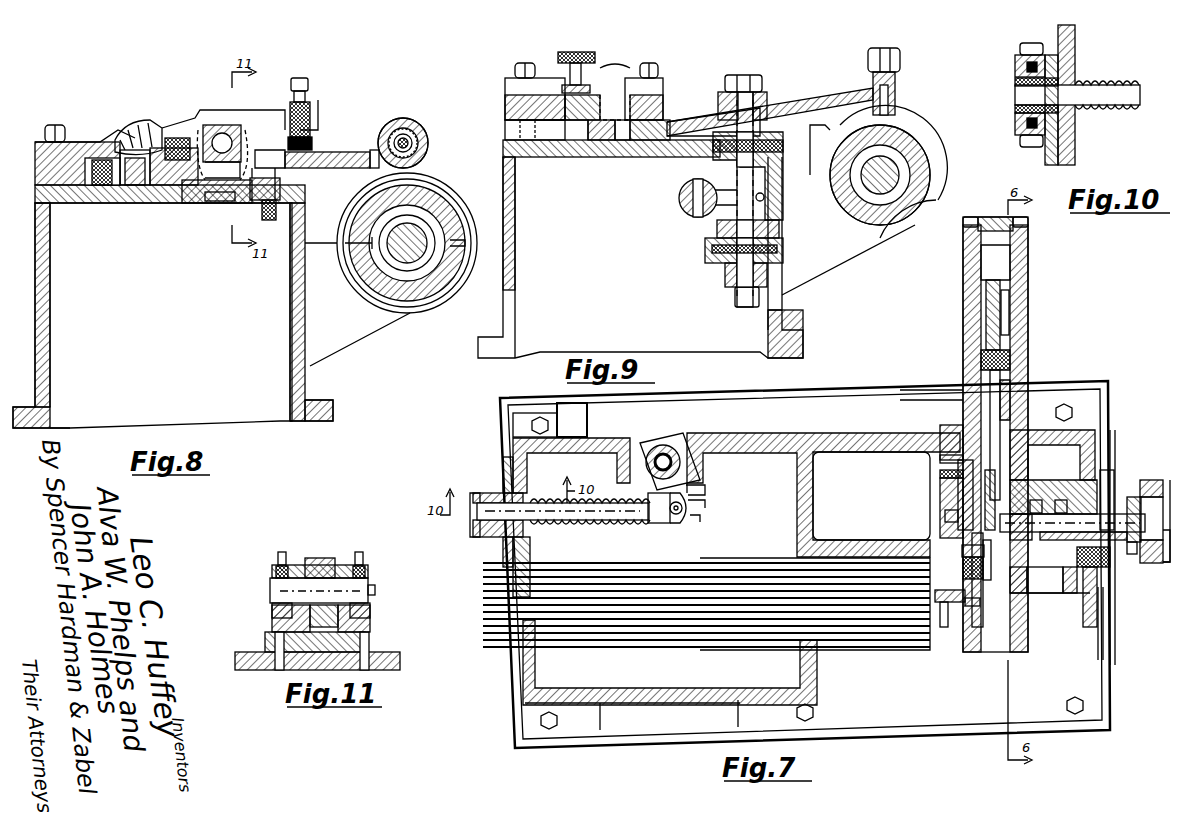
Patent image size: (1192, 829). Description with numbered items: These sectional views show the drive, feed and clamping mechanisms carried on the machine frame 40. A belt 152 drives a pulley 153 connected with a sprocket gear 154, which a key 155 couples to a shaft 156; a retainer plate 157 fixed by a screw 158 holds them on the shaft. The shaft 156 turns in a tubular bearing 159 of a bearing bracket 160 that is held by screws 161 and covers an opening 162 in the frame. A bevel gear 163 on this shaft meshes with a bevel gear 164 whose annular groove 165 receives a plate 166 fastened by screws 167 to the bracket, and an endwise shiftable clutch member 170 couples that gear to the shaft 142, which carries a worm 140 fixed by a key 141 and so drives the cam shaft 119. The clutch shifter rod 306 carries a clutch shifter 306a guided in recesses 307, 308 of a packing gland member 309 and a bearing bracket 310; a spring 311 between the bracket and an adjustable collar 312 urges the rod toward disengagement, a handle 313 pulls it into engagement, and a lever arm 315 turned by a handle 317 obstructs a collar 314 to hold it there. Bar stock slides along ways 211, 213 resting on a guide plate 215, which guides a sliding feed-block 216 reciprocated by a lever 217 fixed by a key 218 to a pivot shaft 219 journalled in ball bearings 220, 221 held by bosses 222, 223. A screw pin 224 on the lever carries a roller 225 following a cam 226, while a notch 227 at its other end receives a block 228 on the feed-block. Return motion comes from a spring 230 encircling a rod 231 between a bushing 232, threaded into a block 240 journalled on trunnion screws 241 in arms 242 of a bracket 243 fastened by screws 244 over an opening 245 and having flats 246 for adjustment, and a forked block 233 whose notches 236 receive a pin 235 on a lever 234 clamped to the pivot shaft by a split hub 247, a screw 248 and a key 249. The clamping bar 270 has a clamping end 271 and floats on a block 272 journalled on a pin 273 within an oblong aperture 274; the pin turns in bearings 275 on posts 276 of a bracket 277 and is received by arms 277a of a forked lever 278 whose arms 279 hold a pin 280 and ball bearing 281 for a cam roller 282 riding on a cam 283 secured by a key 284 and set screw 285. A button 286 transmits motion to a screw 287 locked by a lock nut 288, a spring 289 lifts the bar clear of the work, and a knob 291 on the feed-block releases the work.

In FIG. 8, the machine frame 40 is at (305, 378).
In FIG. 9, the machine frame 40 is at (782, 330).
In FIG. 11, the machine frame 40 is at (252, 665).
In FIG. 9, the cam shaft 119 is at (893, 222).
In FIG. 7, the worm 140 is at (985, 328).
In FIG. 7, the key 141 is at (1010, 302).
In FIG. 7, the shaft 142 is at (1000, 378).
In FIG. 7, the belt 152 is at (1158, 480).
In FIG. 7, the pulley 153 is at (1143, 490).
In FIG. 7, the sprocket gear 154 is at (1135, 545).
In FIG. 7, the key 155 is at (1128, 500).
In FIG. 7, the shaft 156 is at (1110, 560).
In FIG. 7, the retainer plate 157 is at (1168, 545).
In FIG. 7, the screw 158 is at (1168, 570).
In FIG. 7, the tubular bearing 159 is at (1082, 540).
In FIG. 7, the bearing bracket 160 is at (1066, 540).
In FIG. 7, the screws 161 is at (1113, 580).
In FIG. 7, the opening 162 is at (1060, 480).
In FIG. 7, the bevel gear 163 is at (1040, 540).
In FIG. 7, the bevel gear 164 is at (958, 515).
In FIG. 7, the annular groove 165 is at (985, 497).
In FIG. 7, the plate 166 is at (1035, 500).
In FIG. 7, the screws 167 is at (1065, 500).
In FIG. 7, the clutch member 170 is at (940, 460).
In FIG. 8, the way 211 is at (165, 140).
In FIG. 9, the way 211 is at (660, 82).
In FIG. 8, the way 213 is at (75, 148).
In FIG. 9, the way 213 is at (543, 80).
In FIG. 8, the guide plate 215 is at (130, 205).
In FIG. 9, the guide plate 215 is at (507, 110).
In FIG. 9, the feed-block 216 is at (622, 95).
In FIG. 9, the lever 217 is at (797, 108).
In FIG. 9, the key 218 is at (733, 95).
In FIG. 9, the pivot shaft 219 is at (750, 85).
In FIG. 7, the pivot shaft 219 is at (685, 445).
In FIG. 9, the ball bearing 220 is at (720, 150).
In FIG. 9, the ball bearing 221 is at (710, 245).
In FIG. 9, the boss 222 is at (700, 180).
In FIG. 9, the boss 223 is at (720, 228).
In FIG. 9, the screw pin 224 is at (897, 80).
In FIG. 9, the roller 225 is at (900, 115).
In FIG. 9, the cam 226 is at (930, 160).
In FIG. 9, the notch 227 is at (637, 140).
In FIG. 9, the block 228 is at (605, 140).
In FIG. 10, the spring 230 is at (1120, 85).
In FIG. 7, the spring 230 is at (630, 522).
In FIG. 10, the rod 231 is at (1105, 90).
In FIG. 7, the rod 231 is at (650, 512).
In FIG. 10, the bushing 232 is at (1018, 108).
In FIG. 7, the bushing 232 is at (478, 528).
In FIG. 7, the forked block 233 is at (680, 515).
In FIG. 7, the lever 234 is at (690, 492).
In FIG. 7, the pin 235 is at (690, 503).
In FIG. 7, the notch 236 is at (690, 520).
In FIG. 10, the block 240 is at (1015, 86).
In FIG. 7, the block 240 is at (487, 550).
In FIG. 10, the trunnion screws 241 is at (1030, 48).
In FIG. 10, the arms 242 is at (1020, 68).
In FIG. 10, the bracket 243 is at (1065, 118).
In FIG. 7, the bracket 243 is at (506, 470).
In FIG. 7, the screws 244 is at (505, 485).
In FIG. 7, the opening 245 is at (528, 490).
In FIG. 7, the flats 246 is at (482, 500).
In FIG. 7, the split hub 247 is at (705, 462).
In FIG. 7, the screw 248 is at (676, 450).
In FIG. 7, the key 249 is at (705, 482).
In FIG. 8, the clamping bar 270 is at (170, 120).
In FIG. 11, the clamping bar 270 is at (345, 565).
In FIG. 8, the clamping end 271 is at (130, 135).
In FIG. 8, the block 272 is at (232, 128).
In FIG. 11, the block 272 is at (325, 560).
In FIG. 8, the pin 273 is at (210, 205).
In FIG. 11, the pin 273 is at (365, 585).
In FIG. 8, the oblong aperture 274 is at (185, 205).
In FIG. 11, the bearings 275 is at (290, 560).
In FIG. 8, the posts 276 is at (265, 181).
In FIG. 11, the posts 276 is at (290, 624).
In FIG. 8, the bracket 277 is at (220, 205).
In FIG. 11, the bracket 277 is at (268, 645).
In FIG. 11, the arms 277a is at (278, 610).
In FIG. 8, the forked lever 278 is at (337, 152).
In FIG. 8, the arms 279 is at (376, 150).
In FIG. 8, the pin 280 is at (420, 136).
In FIG. 8, the ball bearing 281 is at (410, 147).
In FIG. 8, the cam roller 282 is at (412, 125).
In FIG. 8, the cam 283 is at (445, 190).
In FIG. 8, the key 284 is at (458, 240).
In FIG. 8, the set screw 285 is at (372, 248).
In FIG. 8, the button 286 is at (300, 145).
In FIG. 8, the screw 287 is at (315, 120).
In FIG. 8, the lock nut 288 is at (305, 100).
In FIG. 8, the spring 289 is at (182, 140).
In FIG. 9, the knob 291 is at (580, 52).
In FIG. 7, the clutch shifter rod 306 is at (940, 498).
In FIG. 7, the clutch shifter 306a is at (940, 478).
In FIG. 7, the guiding recess 307 is at (963, 432).
In FIG. 7, the guiding recess 308 is at (950, 605).
In FIG. 7, the packing gland member 309 is at (962, 420).
In FIG. 7, the bearing bracket 310 is at (935, 630).
In FIG. 7, the spring 311 is at (960, 580).
In FIG. 7, the adjustable collar 312 is at (986, 560).
In FIG. 7, the handle 313 is at (978, 600).
In FIG. 7, the collar 314 is at (972, 532).
In FIG. 7, the lever arm 315 is at (1000, 516).
In FIG. 7, the handle 317 is at (968, 640).